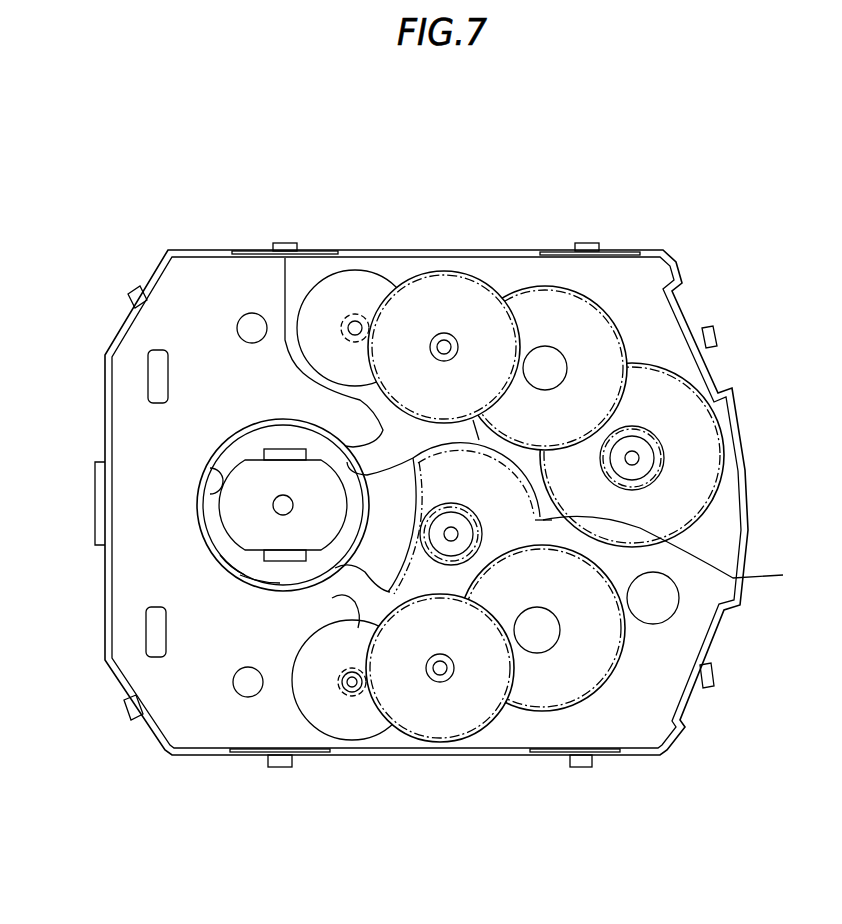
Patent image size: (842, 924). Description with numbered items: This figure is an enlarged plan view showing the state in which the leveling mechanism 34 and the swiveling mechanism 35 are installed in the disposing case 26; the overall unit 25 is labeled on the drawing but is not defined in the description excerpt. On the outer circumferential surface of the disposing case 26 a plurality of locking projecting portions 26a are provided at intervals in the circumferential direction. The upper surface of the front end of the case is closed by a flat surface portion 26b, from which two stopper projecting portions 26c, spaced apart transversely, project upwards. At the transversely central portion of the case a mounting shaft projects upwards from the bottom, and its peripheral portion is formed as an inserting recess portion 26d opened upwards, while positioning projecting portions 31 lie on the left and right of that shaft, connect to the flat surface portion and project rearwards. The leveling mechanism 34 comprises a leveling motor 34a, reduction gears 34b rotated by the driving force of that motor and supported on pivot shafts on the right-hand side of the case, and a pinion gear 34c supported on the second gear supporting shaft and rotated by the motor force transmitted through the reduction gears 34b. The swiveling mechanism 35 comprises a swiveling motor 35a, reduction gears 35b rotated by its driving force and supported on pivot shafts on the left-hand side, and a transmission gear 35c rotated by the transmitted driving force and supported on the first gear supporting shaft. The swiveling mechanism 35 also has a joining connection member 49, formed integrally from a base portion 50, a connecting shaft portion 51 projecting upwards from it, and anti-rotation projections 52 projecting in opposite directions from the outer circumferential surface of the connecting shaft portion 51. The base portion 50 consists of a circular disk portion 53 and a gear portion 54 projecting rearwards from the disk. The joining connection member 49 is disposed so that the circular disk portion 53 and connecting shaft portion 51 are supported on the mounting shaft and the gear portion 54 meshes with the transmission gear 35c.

The drive unit 25 is at (633, 293).
The disposing case 26 is at (103, 556).
The locking projecting portions 26a is at (135, 297).
The flat surface portion 26b is at (203, 262).
The stopper projecting portions 26c is at (150, 377).
The inserting recess portion 26d is at (212, 490).
The positioning projecting portions 31 is at (243, 788).
The leveling mechanism 34 is at (650, 313).
The leveling motor 34a is at (357, 272).
The reduction gears 34b is at (457, 280).
The pinion gear 34c is at (712, 457).
The swiveling mechanism 35 is at (617, 712).
The swiveling motor 35a is at (340, 717).
The reduction gears 35b is at (425, 640).
The transmission gear 35c is at (682, 552).
The joining connection member 49 is at (238, 516).
The base portion 50 is at (233, 553).
The connecting shaft portion 51 is at (215, 540).
The anti-rotation projections 52 is at (277, 447).
The circular disk portion 53 is at (257, 567).
The gear portion 54 is at (436, 727).